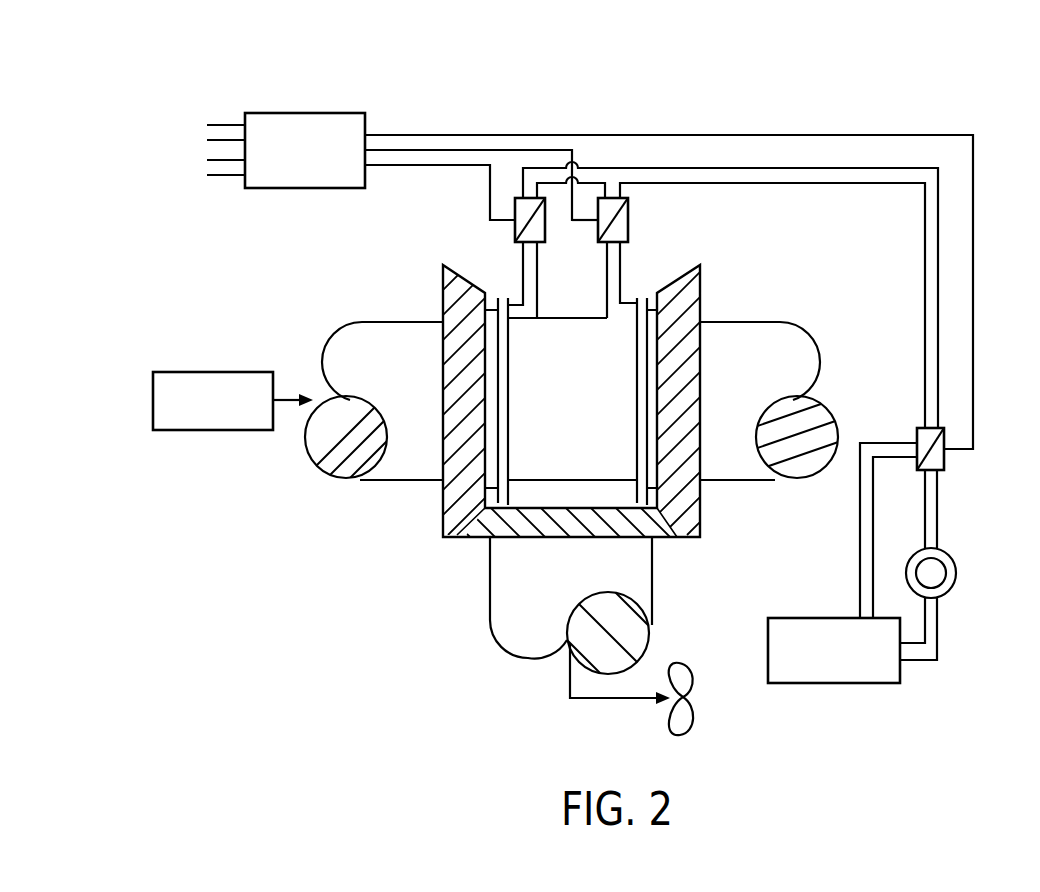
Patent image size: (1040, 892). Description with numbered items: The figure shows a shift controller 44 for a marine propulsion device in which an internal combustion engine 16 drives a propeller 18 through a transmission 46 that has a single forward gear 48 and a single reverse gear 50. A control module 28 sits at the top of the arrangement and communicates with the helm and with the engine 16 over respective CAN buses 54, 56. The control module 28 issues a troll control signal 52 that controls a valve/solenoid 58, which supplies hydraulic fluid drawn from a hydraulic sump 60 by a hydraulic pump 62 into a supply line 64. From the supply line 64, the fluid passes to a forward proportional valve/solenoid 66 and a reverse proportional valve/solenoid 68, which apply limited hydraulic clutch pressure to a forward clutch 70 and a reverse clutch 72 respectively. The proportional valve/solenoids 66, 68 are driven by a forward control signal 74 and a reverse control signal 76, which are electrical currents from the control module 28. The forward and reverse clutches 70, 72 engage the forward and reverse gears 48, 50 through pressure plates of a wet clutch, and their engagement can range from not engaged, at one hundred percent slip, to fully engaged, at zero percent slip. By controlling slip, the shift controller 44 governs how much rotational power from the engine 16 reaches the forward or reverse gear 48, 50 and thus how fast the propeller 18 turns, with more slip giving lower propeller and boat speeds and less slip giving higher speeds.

The internal combustion engine 16 is at (215, 372).
The propeller 18 is at (690, 697).
The control module 28 is at (305, 113).
The shift controller 44 is at (812, 43).
The transmission 46 is at (436, 547).
The forward gear 48 is at (443, 278).
The reverse gear 50 is at (700, 300).
The troll control signal 52 is at (740, 135).
The CAN bus 54 is at (232, 125).
The CAN bus 56 is at (225, 175).
The valve/solenoid 58 is at (944, 462).
The hydraulic sump 60 is at (835, 683).
The hydraulic pump 62 is at (950, 557).
The supply line 64 is at (772, 183).
The forward proportional valve/solenoid 66 is at (515, 230).
The reverse proportional valve/solenoid 68 is at (628, 225).
The forward clutch 70 is at (508, 400).
The reverse clutch 72 is at (637, 403).
The forward control signal 74 is at (489, 192).
The reverse control signal 76 is at (588, 221).